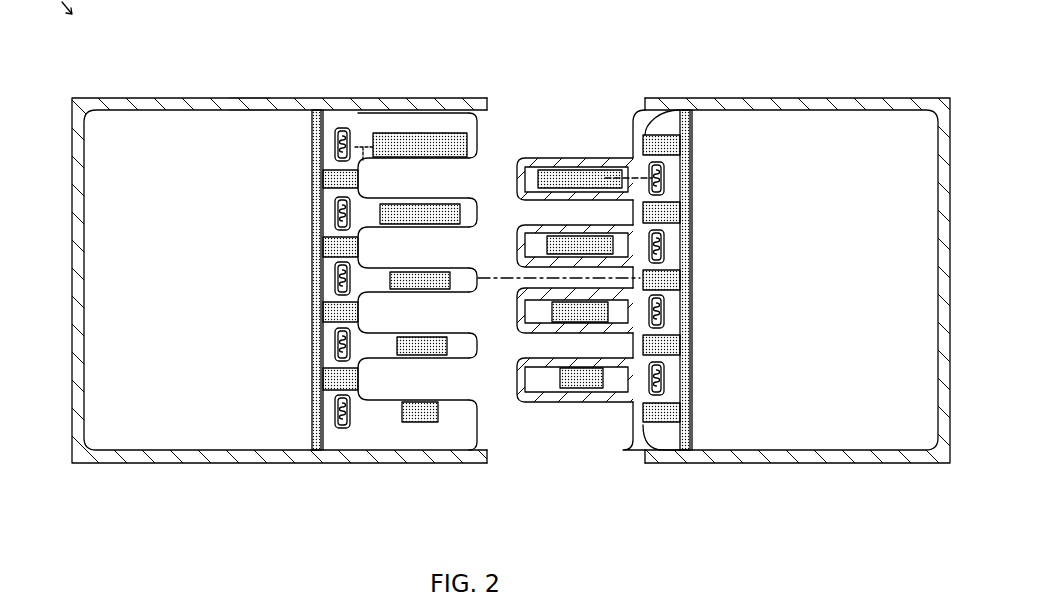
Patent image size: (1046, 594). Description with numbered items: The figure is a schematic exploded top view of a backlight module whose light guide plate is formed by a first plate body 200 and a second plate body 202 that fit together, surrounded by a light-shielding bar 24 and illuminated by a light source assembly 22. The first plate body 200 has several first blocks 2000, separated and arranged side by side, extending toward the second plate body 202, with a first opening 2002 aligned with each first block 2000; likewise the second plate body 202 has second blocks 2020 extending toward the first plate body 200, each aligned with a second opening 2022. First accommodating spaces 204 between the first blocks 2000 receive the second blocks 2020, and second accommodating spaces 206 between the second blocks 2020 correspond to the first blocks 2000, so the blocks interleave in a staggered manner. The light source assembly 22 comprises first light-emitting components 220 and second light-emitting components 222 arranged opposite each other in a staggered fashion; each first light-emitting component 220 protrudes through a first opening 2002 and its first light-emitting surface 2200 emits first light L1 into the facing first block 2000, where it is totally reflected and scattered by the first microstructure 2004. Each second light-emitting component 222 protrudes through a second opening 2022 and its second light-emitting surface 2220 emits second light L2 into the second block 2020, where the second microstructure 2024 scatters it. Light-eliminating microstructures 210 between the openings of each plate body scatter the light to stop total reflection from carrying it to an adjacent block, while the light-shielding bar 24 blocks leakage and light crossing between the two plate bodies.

The first plate body 200 is at (158, 118).
The second plate body 202 is at (880, 128).
The light-shielding bar 24 is at (250, 108).
The light source assembly 22 is at (330, 45).
The first light-emitting component 220 is at (322, 146).
The second light-emitting component 222 is at (683, 180).
The light-eliminating microstructure 210 is at (323, 320).
The first block 2000 is at (458, 128).
The first opening 2002 is at (342, 127).
The first light-emitting surface 2200 is at (358, 130).
The first microstructure 2004 is at (430, 145).
The first accommodating space 204 is at (448, 378).
The second accommodating space 206 is at (561, 345).
The second block 2020 is at (530, 180).
The second microstructure 2024 is at (600, 170).
The second opening 2022 is at (657, 160).
The second light-emitting surface 2220 is at (650, 155).
The first light L1 is at (365, 160).
The second light L2 is at (630, 190).